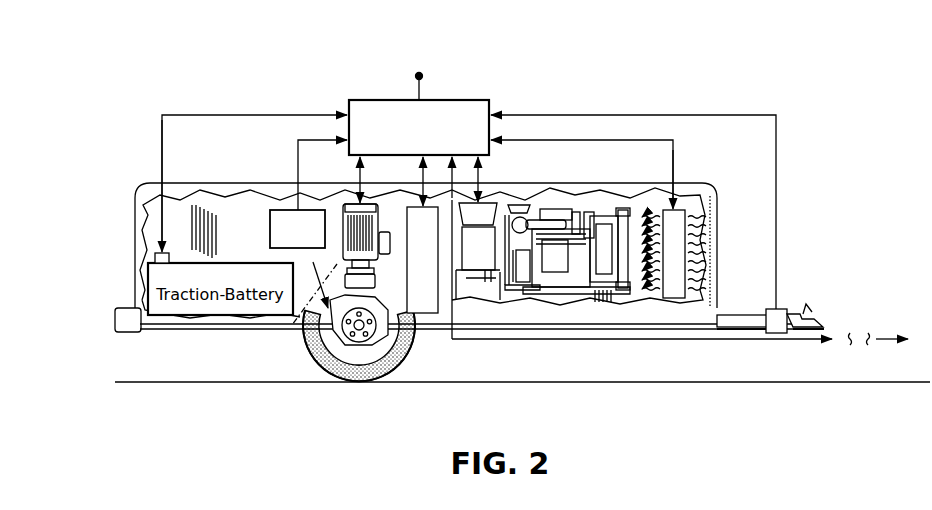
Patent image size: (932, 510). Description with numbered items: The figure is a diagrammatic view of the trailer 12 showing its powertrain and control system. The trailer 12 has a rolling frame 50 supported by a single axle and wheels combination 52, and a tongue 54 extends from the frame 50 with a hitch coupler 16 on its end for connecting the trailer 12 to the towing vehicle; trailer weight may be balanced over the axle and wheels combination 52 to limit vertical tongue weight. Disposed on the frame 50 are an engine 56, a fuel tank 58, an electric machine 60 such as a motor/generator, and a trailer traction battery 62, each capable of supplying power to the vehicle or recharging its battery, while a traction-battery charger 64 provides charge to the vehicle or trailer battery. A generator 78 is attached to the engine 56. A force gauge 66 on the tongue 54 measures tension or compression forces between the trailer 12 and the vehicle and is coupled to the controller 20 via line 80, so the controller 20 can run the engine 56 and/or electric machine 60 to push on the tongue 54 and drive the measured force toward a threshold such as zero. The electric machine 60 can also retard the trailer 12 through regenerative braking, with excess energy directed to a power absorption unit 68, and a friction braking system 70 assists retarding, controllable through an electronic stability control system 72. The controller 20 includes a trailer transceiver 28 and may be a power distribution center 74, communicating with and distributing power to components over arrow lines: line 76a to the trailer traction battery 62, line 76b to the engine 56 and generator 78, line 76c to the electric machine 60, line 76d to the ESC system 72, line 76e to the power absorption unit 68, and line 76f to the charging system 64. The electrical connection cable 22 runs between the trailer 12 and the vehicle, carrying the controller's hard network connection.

The trailer 12 is at (118, 96).
The hitch coupler 16 is at (815, 314).
The controller 20 is at (340, 88).
The electrical connection cable 22 is at (778, 340).
The trailer transceiver 28 is at (412, 93).
The rolling frame 50 is at (590, 338).
The axle and wheels combination 52 is at (422, 356).
The tongue 54 is at (730, 315).
The engine 56 is at (540, 218).
The fuel tank 58 is at (540, 300).
The electric machine 60 is at (386, 232).
The trailer traction battery 62 is at (235, 318).
The traction-battery charger 64 is at (422, 260).
The force gauge 66 is at (780, 309).
The power absorption unit 68 is at (676, 212).
The friction braking system 70 is at (330, 329).
The electronic stability control system 72 is at (270, 232).
The power distribution center 74 is at (455, 100).
The line to trailer traction battery 76a is at (240, 115).
The line to engine 76b is at (482, 177).
The line to electric machine 76c is at (356, 177).
The line to ESC system 76d is at (292, 177).
The line to power absorption unit 76e is at (595, 134).
The line to charging system 76f is at (420, 177).
The generator 78 is at (478, 251).
The line to force gauge 80 is at (640, 115).